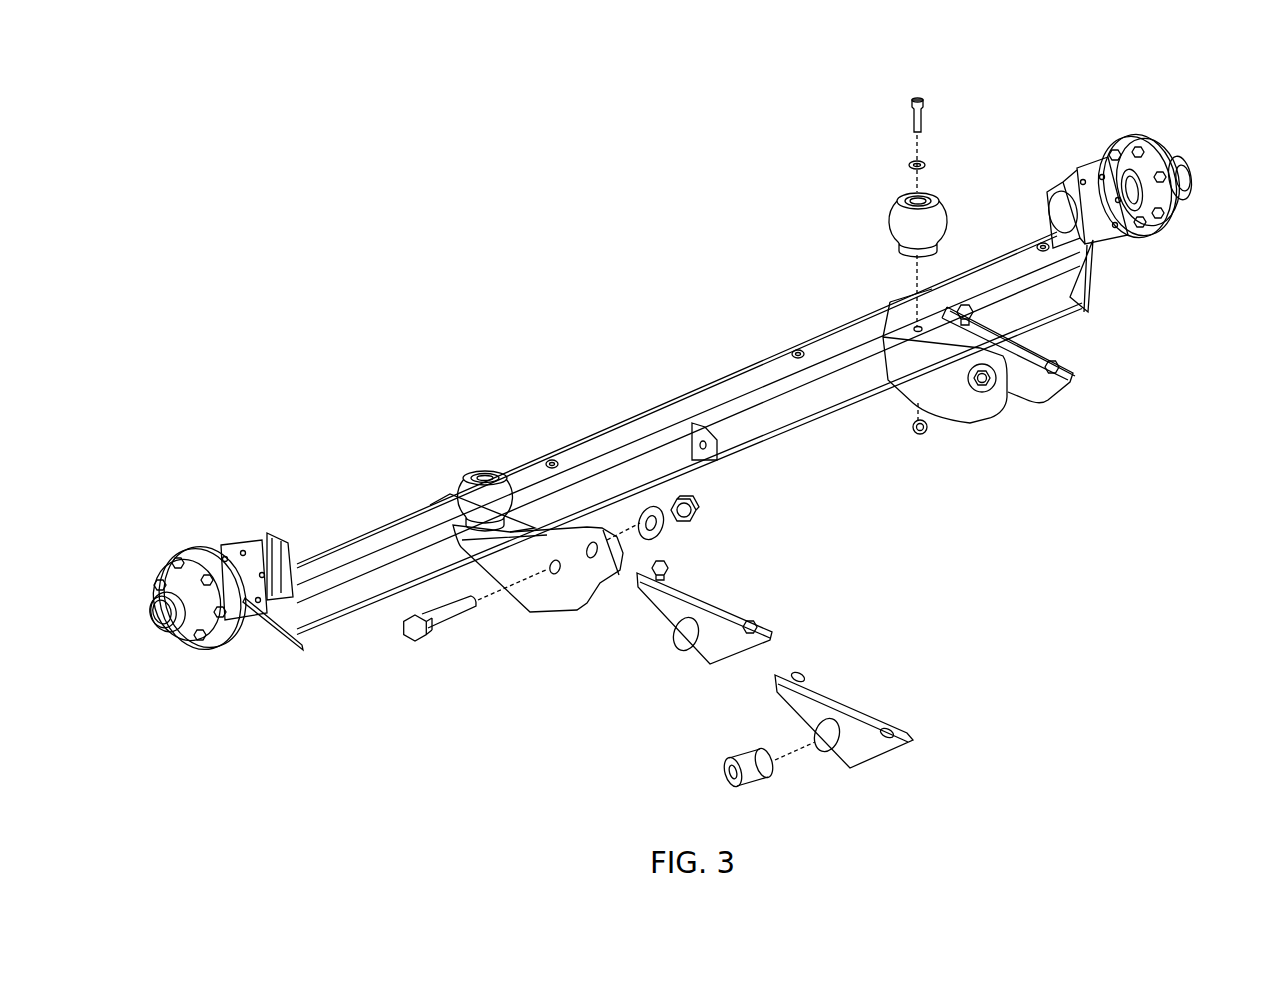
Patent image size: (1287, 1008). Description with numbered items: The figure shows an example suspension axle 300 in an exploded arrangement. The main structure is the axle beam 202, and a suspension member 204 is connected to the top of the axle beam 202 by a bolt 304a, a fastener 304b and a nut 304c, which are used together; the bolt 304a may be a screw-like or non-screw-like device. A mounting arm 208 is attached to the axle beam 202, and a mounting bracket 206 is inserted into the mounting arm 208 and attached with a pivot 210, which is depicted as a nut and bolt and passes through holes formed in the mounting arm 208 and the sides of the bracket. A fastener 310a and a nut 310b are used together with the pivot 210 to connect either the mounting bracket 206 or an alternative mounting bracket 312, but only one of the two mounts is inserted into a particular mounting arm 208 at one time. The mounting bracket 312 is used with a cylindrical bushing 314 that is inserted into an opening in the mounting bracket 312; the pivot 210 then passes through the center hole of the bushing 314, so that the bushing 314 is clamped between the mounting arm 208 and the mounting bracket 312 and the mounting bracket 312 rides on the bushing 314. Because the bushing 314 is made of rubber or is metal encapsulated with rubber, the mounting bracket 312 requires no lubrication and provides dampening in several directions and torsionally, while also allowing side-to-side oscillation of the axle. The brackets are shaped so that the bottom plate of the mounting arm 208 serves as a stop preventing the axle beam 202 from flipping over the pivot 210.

The suspension axle 300 is at (440, 163).
The axle beam 202 is at (683, 391).
The suspension member 204 is at (890, 205).
The mounting bracket 206 is at (724, 592).
The mounting arm 208 is at (567, 619).
The pivot 210 is at (410, 650).
The bolt 304a is at (927, 96).
The fastener 304b is at (928, 162).
The nut 304c is at (923, 437).
The fastener 310a is at (643, 501).
The nut 310b is at (703, 502).
The mounting bracket 312 is at (870, 699).
The bushing 314 is at (722, 780).